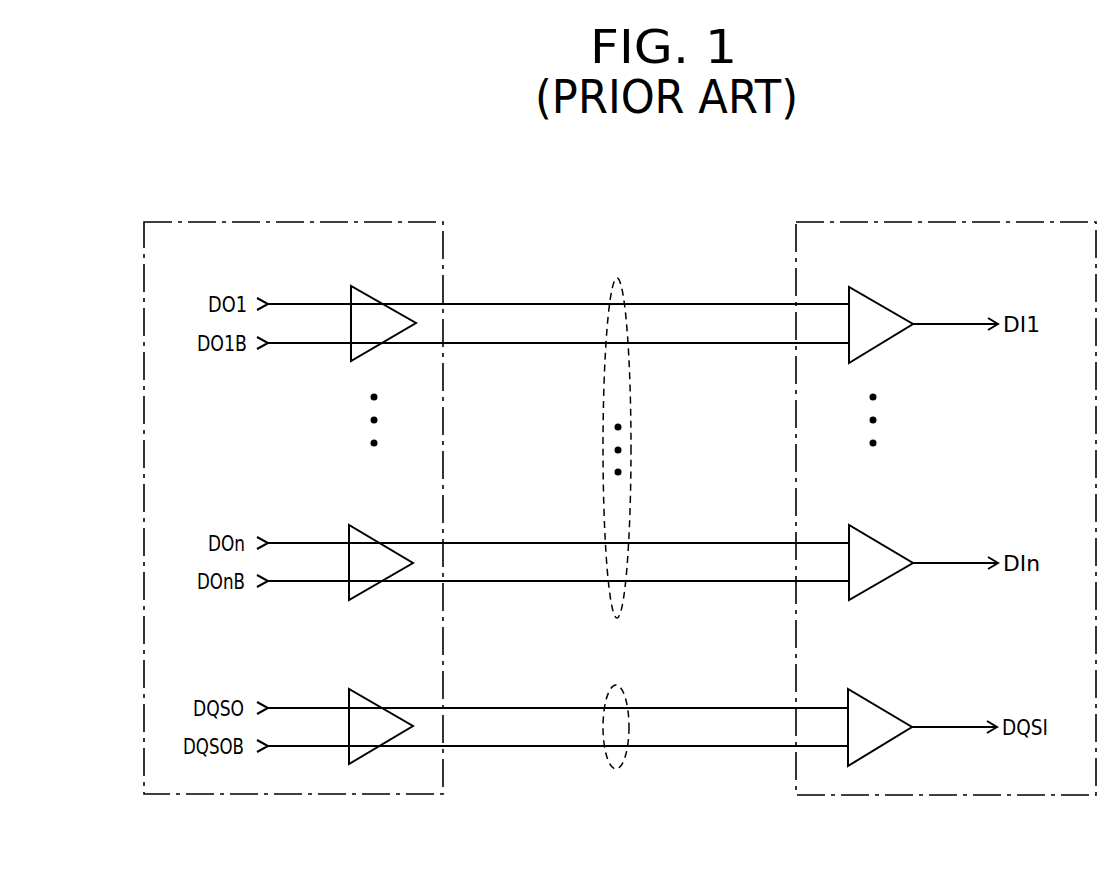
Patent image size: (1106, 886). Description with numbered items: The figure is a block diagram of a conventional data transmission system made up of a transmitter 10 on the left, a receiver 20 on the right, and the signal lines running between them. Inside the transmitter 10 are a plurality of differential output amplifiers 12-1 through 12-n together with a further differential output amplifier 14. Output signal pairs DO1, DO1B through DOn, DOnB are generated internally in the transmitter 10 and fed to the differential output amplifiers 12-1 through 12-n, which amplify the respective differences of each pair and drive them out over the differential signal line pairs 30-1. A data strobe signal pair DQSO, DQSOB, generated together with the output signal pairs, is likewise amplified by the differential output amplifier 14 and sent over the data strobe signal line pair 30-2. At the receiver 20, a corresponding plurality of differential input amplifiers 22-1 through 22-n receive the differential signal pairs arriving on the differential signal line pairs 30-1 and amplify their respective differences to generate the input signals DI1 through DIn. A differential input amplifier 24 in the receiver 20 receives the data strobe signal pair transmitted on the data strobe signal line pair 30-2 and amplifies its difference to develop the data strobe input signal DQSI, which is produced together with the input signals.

The transmitter 10 is at (310, 796).
The receiver 20 is at (945, 797).
The differential output amplifier 12-1 is at (383, 272).
The differential output amplifier 12-n is at (382, 512).
The differential output amplifier 14 is at (364, 692).
The differential input amplifier 22-1 is at (881, 272).
The differential input amplifier 22-n is at (881, 512).
The differential input amplifier 24 is at (878, 675).
The differential signal line pairs 30-1 is at (628, 600).
The data strobe signal line pair 30-2 is at (626, 758).